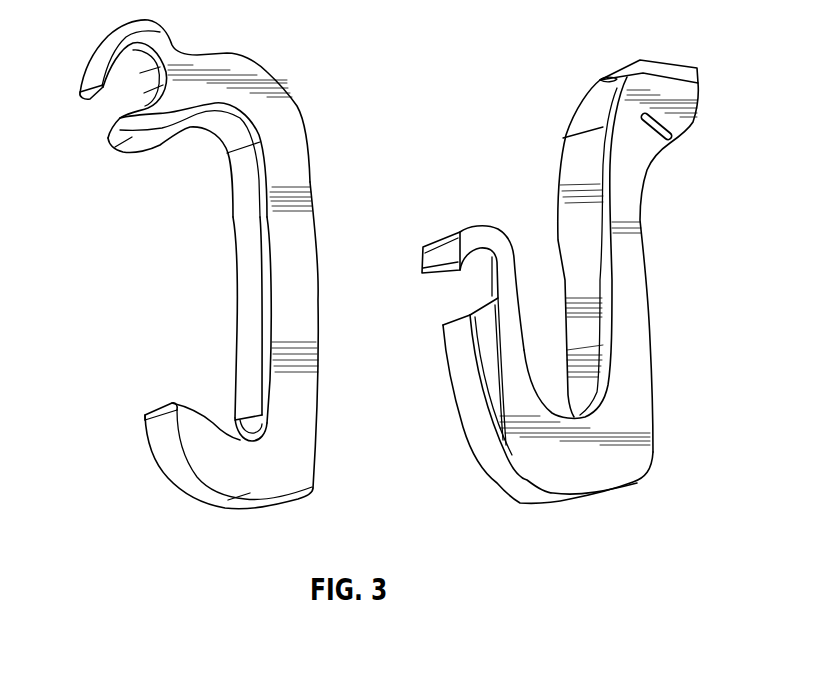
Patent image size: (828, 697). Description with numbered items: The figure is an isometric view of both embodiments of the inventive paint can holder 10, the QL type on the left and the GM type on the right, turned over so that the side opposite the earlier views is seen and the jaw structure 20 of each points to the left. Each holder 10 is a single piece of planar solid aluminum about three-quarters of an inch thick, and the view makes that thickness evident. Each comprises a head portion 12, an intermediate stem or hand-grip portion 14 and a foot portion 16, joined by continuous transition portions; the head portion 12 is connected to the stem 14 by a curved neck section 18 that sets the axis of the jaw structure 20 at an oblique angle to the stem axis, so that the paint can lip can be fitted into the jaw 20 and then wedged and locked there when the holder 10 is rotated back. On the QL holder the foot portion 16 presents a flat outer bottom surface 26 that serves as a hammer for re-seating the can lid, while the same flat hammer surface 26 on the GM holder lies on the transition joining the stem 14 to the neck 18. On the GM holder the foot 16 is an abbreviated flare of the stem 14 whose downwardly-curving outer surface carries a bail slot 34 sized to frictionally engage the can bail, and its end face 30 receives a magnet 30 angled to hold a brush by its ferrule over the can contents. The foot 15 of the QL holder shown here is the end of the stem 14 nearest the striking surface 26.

The paint can holder 10 is at (381, 288).
The head portion 12 is at (167, 27).
The stem portion 14 is at (312, 170).
The foot 15 is at (163, 494).
The foot portion 16 is at (580, 93).
The curved neck section 18 is at (520, 455).
The jaw structure 20 is at (85, 124).
The hammer surface 26 is at (273, 510).
The magnet 30 is at (645, 62).
The bail slot 34 is at (672, 150).